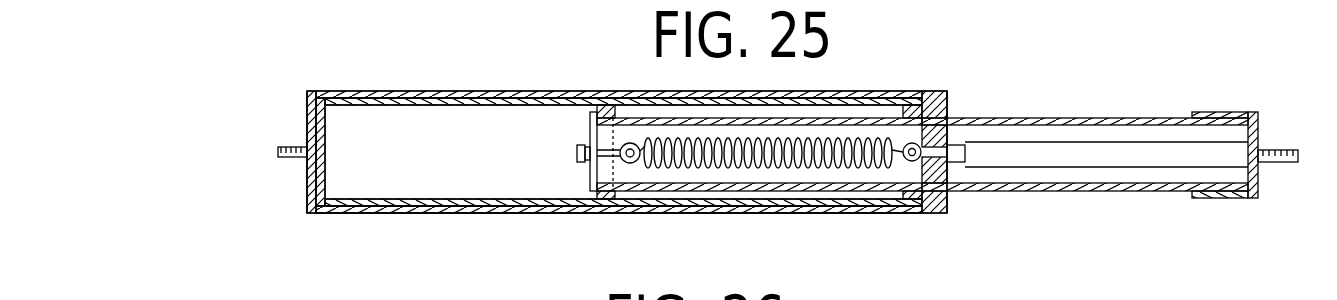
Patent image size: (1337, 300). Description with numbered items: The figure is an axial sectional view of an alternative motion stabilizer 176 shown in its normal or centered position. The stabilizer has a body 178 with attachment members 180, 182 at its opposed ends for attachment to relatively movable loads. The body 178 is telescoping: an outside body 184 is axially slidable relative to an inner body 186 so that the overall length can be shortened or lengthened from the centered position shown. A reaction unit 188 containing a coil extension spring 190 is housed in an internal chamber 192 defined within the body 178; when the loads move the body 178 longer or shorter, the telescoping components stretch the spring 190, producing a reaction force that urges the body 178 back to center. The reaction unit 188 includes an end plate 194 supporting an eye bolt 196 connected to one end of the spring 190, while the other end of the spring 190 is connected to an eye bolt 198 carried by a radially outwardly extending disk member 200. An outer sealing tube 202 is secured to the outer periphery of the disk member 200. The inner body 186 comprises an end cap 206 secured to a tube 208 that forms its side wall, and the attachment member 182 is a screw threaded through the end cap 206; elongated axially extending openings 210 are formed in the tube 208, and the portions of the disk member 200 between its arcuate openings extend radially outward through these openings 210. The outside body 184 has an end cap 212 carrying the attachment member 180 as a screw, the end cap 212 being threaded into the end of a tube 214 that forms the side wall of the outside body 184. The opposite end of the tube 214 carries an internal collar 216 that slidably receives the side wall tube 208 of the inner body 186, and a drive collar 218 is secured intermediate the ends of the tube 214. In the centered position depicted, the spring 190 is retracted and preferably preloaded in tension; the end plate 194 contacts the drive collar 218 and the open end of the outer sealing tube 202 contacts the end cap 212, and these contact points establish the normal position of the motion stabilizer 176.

The motion stabilizer 176 is at (906, 35).
The body 178 is at (513, 91).
The attachment member 180 is at (280, 157).
The attachment member 182 is at (1298, 150).
The outside body 184 is at (360, 214).
The inner body 186 is at (1068, 193).
The reaction unit 188 is at (947, 103).
The coil extension spring 190 is at (785, 168).
The internal chamber 192 is at (870, 178).
The end plate 194 is at (590, 128).
The eye bolt 196 is at (635, 164).
The eye bolt 198 is at (908, 143).
The disk member 200 is at (945, 213).
The outer sealing tube 202 is at (437, 92).
The end cap 206 is at (1225, 112).
The tube 208 is at (1077, 117).
The axially extending openings 210 is at (1135, 157).
The end cap 212 is at (307, 132).
The tube 214 is at (393, 105).
The internal collar 216 is at (910, 196).
The drive collar 218 is at (598, 110).